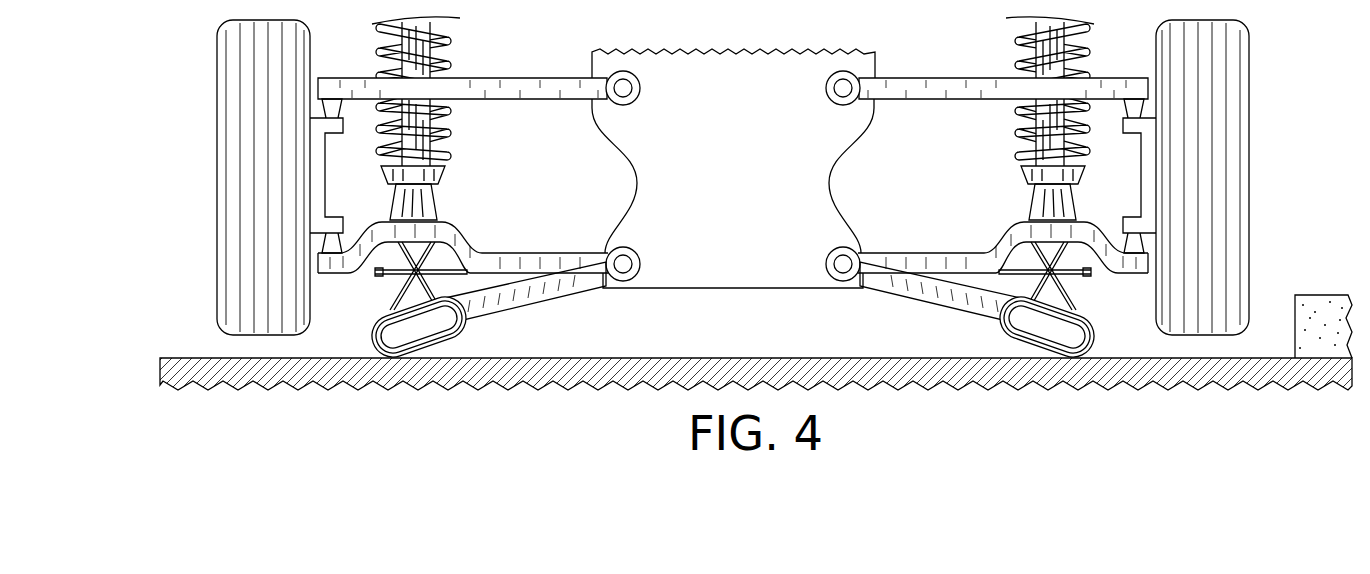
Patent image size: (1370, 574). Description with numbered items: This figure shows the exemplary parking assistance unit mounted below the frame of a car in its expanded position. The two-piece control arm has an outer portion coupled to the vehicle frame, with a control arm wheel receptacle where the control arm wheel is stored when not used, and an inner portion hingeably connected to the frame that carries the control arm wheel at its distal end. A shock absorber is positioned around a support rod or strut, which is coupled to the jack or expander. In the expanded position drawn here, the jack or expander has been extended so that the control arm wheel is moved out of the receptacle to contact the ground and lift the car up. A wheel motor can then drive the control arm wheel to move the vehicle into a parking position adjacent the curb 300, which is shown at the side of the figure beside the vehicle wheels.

The curb 300 is at (1318, 303).